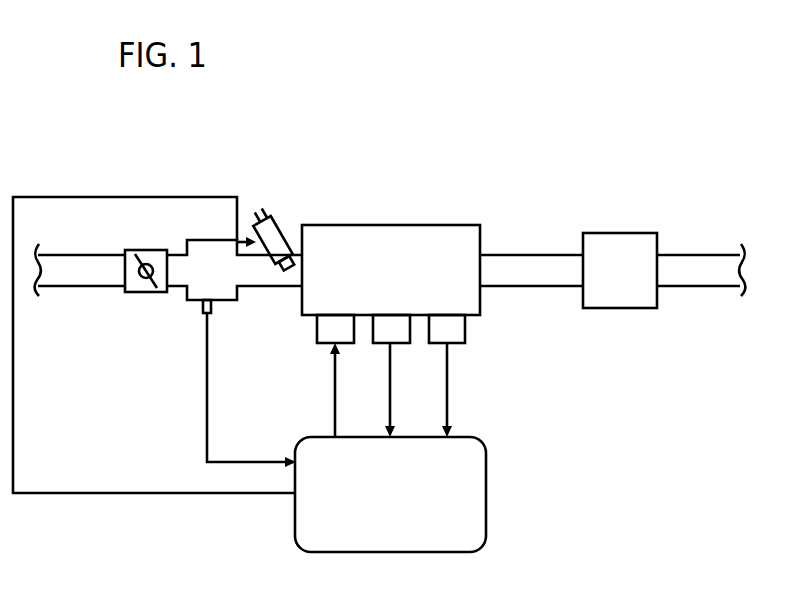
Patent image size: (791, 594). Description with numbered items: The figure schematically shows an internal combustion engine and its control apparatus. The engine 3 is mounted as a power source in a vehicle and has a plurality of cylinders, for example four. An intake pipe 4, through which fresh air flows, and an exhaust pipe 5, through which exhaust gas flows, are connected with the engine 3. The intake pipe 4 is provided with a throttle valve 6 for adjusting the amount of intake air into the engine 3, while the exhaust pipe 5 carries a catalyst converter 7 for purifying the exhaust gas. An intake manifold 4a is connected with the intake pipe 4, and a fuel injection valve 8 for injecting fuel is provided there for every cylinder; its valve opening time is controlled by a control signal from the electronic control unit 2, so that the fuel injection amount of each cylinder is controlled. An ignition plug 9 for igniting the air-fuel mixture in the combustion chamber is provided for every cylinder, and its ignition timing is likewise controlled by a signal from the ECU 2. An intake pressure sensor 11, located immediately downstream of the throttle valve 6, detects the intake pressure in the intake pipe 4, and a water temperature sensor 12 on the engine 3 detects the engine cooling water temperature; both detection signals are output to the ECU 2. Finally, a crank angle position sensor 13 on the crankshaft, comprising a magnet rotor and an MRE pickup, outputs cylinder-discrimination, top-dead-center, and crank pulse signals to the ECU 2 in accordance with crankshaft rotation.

The electronic control unit (ECU) 2 is at (486, 470).
The internal combustion engine 3 is at (388, 225).
The intake pipe 4 is at (62, 255).
The intake manifold 4a is at (275, 287).
The exhaust pipe 5 is at (522, 255).
The throttle valve 6 is at (145, 261).
The catalyst converter 7 is at (622, 233).
The fuel injection valve 8 is at (279, 222).
The ignition plug 9 is at (318, 345).
The intake pressure sensor 11 is at (207, 315).
The water temperature sensor 12 is at (402, 345).
The crank angle position sensor 13 is at (465, 326).